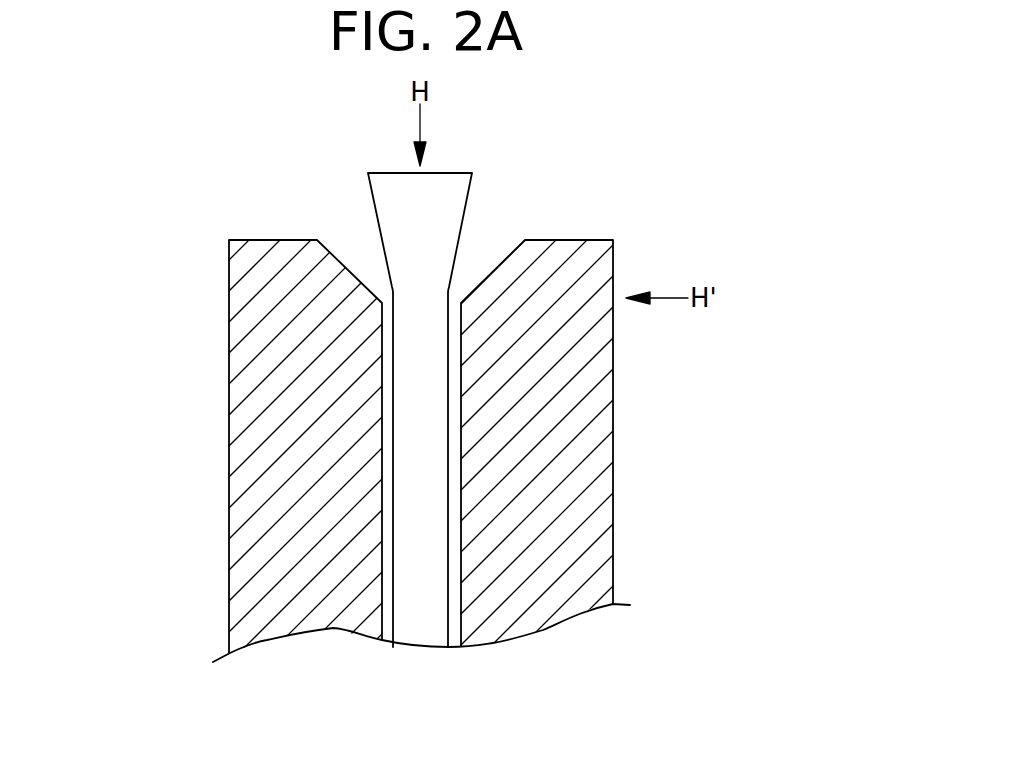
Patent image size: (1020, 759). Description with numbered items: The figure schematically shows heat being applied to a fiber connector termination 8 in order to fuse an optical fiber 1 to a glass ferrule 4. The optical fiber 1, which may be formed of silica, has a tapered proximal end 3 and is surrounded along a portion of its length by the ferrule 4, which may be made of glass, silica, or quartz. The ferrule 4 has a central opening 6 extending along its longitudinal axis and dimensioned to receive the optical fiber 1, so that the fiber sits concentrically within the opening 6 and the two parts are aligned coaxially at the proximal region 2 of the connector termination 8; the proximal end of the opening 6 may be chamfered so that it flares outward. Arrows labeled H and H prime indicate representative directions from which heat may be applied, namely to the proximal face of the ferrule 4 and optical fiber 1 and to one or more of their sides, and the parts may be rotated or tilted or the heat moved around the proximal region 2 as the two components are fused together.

The optical fiber 1 is at (423, 453).
The proximal region 2 is at (202, 292).
The tapered proximal end 3 is at (448, 207).
The ferrule 4 is at (250, 444).
The central opening 6 is at (453, 528).
The connector termination 8 is at (690, 237).